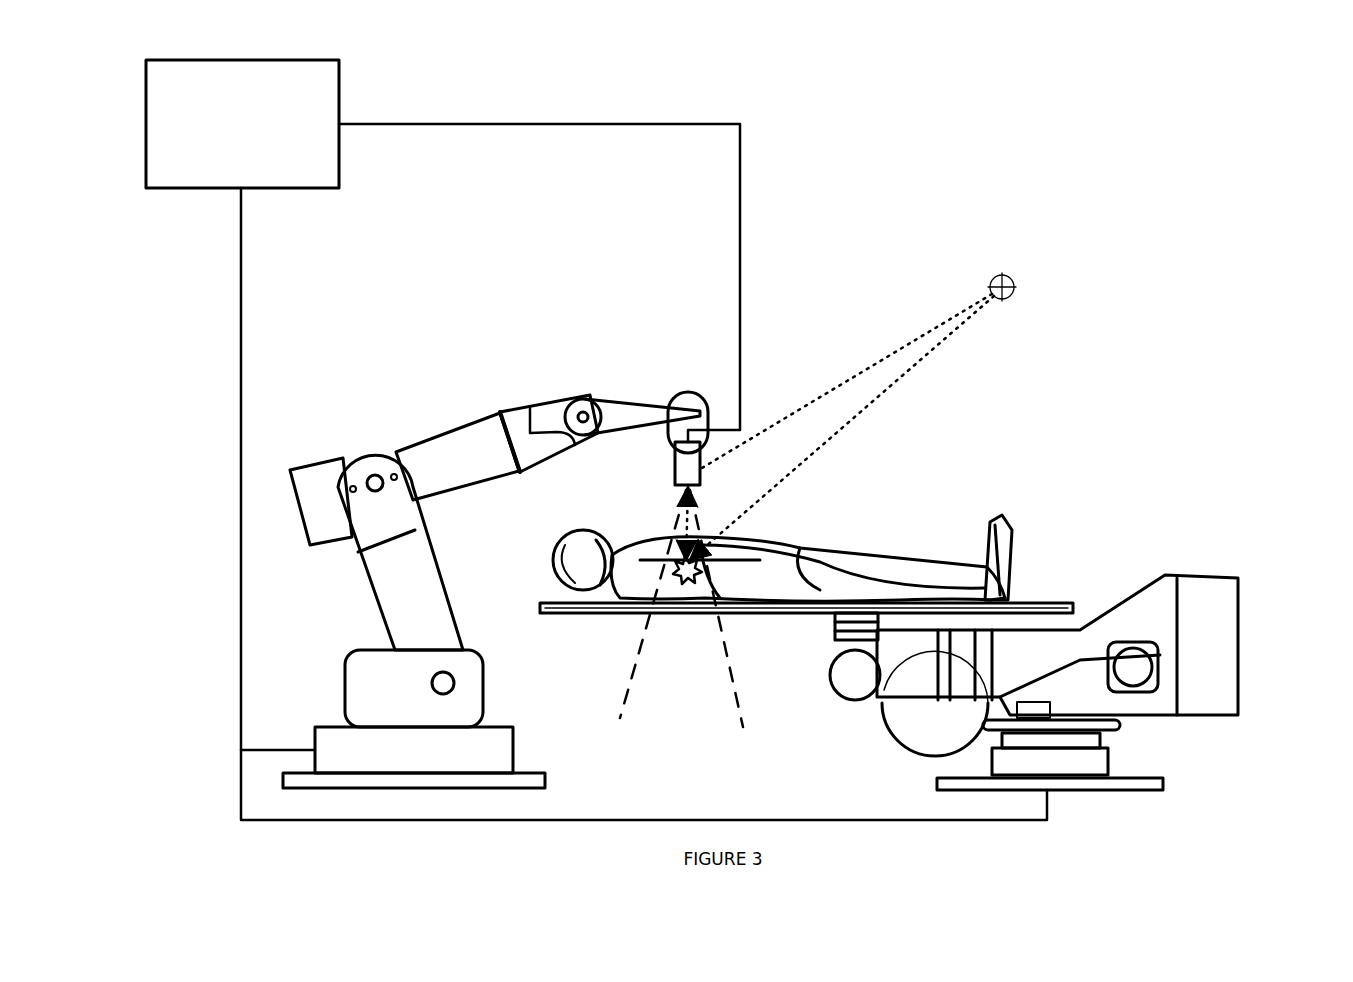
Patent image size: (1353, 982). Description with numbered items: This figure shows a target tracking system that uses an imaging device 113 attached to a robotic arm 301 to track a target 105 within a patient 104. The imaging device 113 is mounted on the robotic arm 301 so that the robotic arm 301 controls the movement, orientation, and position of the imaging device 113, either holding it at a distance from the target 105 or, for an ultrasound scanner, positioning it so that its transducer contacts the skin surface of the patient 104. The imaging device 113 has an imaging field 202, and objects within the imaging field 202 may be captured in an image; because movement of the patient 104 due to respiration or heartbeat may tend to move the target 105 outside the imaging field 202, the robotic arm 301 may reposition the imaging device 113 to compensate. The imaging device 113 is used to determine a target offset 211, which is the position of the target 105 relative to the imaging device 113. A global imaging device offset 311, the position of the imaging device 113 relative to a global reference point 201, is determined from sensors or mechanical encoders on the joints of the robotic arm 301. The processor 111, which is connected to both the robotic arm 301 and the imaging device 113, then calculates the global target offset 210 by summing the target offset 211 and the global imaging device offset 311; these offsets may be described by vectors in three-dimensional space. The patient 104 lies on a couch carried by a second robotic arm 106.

The processor 111 is at (242, 124).
The robotic arm 301 is at (360, 425).
The imaging device 113 is at (666, 463).
The target 105 is at (685, 586).
The imaging field 202 is at (738, 657).
The target offset 211 is at (696, 526).
The global target offset 210 is at (893, 394).
The global imaging device offset 311 is at (885, 350).
The global reference point 201 is at (1032, 285).
The patient 104 is at (1032, 540).
The robotic arm 106 is at (1180, 562).